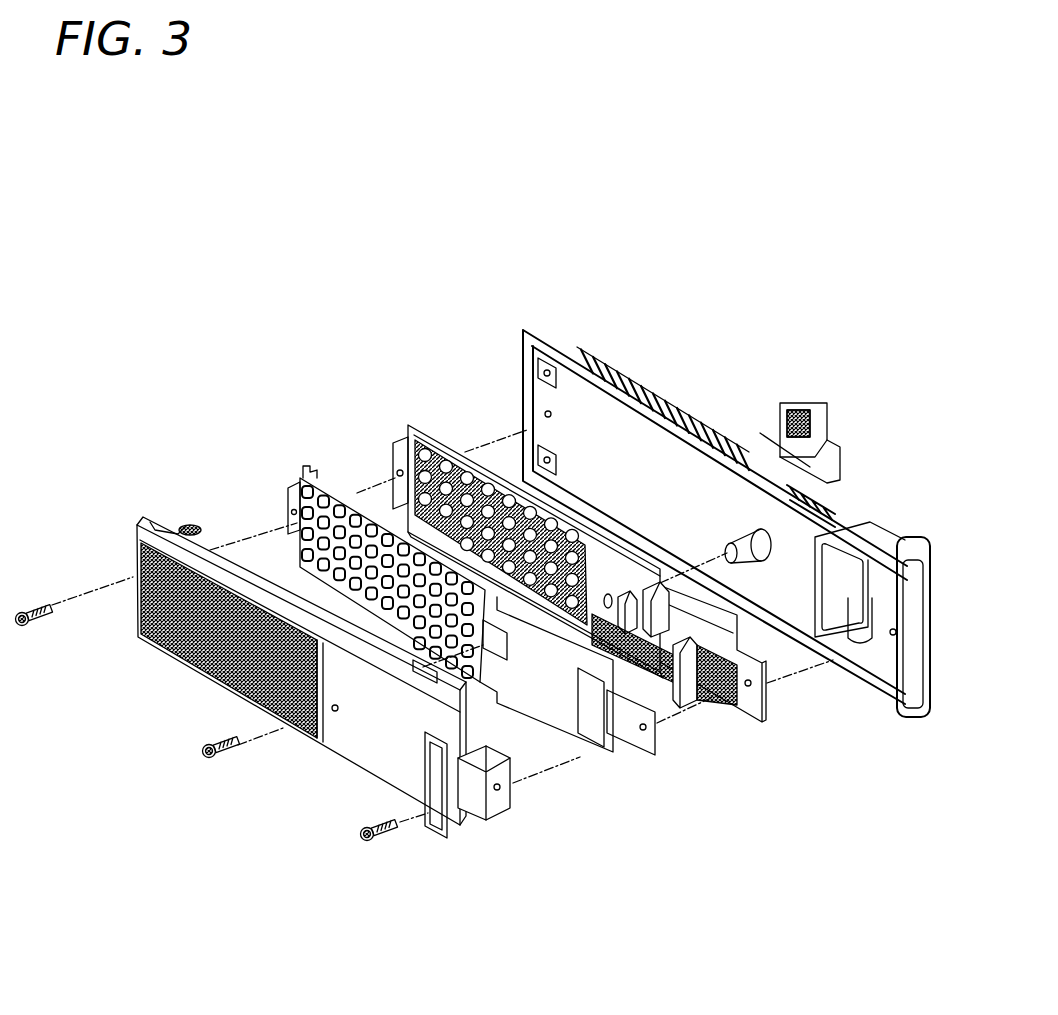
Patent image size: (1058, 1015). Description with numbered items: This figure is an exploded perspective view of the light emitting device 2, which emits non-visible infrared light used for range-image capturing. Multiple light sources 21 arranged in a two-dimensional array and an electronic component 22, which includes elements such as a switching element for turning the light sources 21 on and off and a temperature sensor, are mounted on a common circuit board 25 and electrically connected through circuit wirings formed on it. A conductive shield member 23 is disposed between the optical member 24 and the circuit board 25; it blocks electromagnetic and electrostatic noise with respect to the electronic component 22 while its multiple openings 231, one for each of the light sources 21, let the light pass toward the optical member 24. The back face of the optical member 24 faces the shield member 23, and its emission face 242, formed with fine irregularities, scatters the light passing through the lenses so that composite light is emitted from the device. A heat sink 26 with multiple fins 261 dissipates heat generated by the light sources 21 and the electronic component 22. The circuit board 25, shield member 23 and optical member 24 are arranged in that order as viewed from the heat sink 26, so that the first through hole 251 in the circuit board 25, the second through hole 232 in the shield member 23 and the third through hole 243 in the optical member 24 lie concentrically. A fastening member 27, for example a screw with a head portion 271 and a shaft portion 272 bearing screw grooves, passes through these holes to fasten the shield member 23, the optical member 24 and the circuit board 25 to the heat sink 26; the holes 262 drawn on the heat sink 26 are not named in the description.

The light emitting device 2 is at (451, 243).
The light sources 21 is at (443, 466).
The electronic component 22 is at (656, 688).
The shield member 23 is at (601, 780).
The optical member 24 is at (149, 502).
The circuit board 25 is at (739, 735).
The heat sink 26 is at (876, 491).
The fastening member 27 is at (39, 584).
The openings 231 is at (347, 506).
The second through hole 232 is at (297, 510).
The emission face 242 is at (205, 672).
The third through hole 243 is at (498, 787).
The first through hole 251 is at (398, 470).
The fins 261 is at (698, 405).
The screw hole 262 is at (545, 411).
The head portion 271 is at (23, 626).
The shaft portion 272 is at (42, 614).